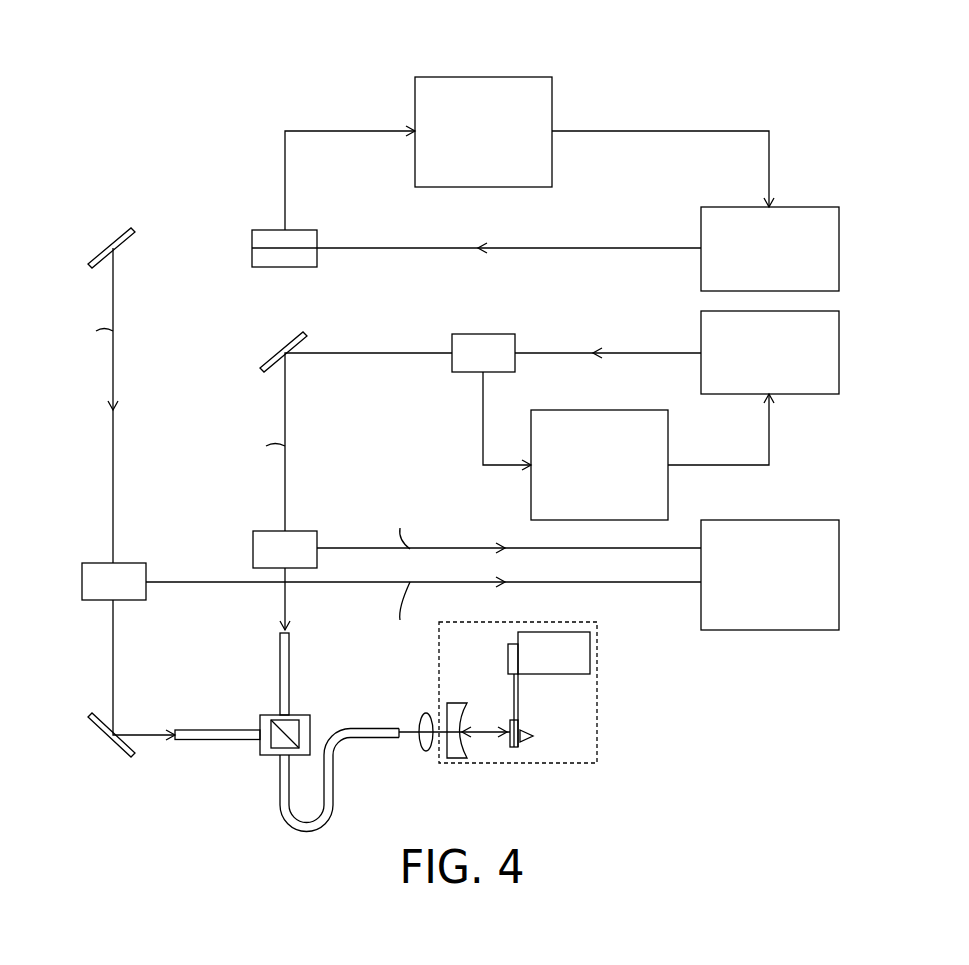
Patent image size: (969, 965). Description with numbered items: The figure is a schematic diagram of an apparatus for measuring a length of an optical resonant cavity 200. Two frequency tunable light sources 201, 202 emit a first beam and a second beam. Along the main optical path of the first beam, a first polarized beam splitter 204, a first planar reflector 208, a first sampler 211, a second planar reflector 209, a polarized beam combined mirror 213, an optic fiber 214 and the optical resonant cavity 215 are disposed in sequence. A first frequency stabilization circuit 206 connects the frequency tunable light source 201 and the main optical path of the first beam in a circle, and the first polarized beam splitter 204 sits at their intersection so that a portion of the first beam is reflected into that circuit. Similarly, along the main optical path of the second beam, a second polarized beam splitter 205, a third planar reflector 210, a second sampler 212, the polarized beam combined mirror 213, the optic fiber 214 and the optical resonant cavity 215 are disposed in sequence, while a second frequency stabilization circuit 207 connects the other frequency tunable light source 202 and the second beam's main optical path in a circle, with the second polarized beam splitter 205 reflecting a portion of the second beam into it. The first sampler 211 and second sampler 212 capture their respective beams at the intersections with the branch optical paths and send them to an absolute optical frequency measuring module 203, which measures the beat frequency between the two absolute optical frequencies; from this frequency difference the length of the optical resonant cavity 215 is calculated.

The apparatus for measuring a length of an optical resonant cavity 200 is at (95, 35).
The frequency tunable light source 201 is at (818, 207).
The frequency tunable light source 202 is at (810, 394).
The absolute optical frequency measuring module 203 is at (770, 520).
The first polarized beam splitter 204 is at (268, 230).
The second polarized beam splitter 205 is at (484, 334).
The first frequency stabilization circuit 206 is at (484, 77).
The second frequency stabilization circuit 207 is at (604, 410).
The first planar reflector 208 is at (126, 236).
The second planar reflector 209 is at (111, 741).
The third planar reflector 210 is at (272, 358).
The first sampler 211 is at (97, 563).
The second sampler 212 is at (266, 531).
The polarized beam combined mirror 213 is at (262, 745).
The optic fiber 214 is at (291, 675).
The optical resonant cavity 215 is at (597, 690).